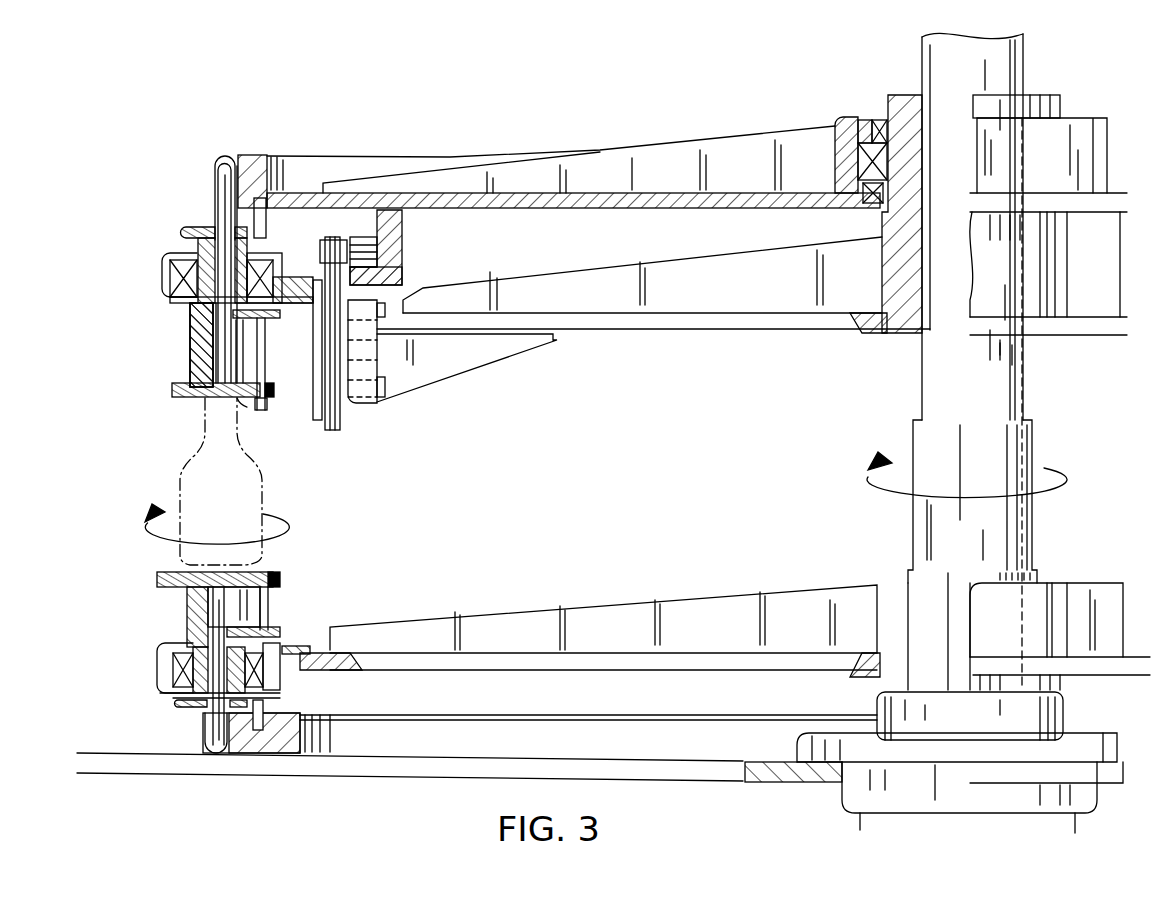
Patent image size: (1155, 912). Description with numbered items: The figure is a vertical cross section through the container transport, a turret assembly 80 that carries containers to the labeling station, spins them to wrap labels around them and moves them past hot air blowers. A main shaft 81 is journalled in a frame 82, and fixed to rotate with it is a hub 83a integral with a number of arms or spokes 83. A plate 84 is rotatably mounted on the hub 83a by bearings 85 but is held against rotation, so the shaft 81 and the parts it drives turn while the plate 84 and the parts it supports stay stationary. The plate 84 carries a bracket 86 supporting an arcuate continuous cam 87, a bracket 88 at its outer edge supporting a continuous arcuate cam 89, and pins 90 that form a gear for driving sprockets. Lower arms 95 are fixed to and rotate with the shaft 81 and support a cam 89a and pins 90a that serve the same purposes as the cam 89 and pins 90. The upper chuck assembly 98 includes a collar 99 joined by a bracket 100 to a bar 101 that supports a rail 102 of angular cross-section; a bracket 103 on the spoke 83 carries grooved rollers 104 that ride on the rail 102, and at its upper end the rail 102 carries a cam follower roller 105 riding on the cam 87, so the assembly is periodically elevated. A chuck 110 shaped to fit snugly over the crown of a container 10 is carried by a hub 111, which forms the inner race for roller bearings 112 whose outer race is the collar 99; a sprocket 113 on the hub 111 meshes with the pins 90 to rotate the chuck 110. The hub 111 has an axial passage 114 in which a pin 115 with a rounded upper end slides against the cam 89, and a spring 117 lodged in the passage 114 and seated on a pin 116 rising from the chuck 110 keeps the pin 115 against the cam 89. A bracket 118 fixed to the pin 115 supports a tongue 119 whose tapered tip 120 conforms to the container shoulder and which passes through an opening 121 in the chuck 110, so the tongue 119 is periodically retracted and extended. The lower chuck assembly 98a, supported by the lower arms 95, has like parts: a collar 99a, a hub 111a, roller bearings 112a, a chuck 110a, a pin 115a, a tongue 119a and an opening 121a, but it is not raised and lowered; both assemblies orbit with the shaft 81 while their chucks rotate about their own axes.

The container 10 is at (168, 493).
The turret assembly 80 is at (1050, 86).
The main shaft 81 is at (968, 401).
The frame 82 is at (1073, 733).
The arm or spoke 83 is at (797, 337).
The hub 83a is at (880, 222).
The plate 84 is at (670, 195).
The bearings 85 is at (835, 120).
The bracket 86 is at (402, 226).
The arcuate continuous cam 87 is at (378, 255).
The bracket 88 is at (260, 157).
The continuous arcuate cam 89 is at (257, 155).
The cam 89a is at (205, 746).
The pins 90 is at (266, 227).
The pins 90a is at (264, 712).
The lower arms 95 is at (567, 670).
The chuck assembly 98 is at (200, 282).
The chuck assembly 98a is at (205, 652).
The collar 99 is at (162, 270).
The collar 99a is at (160, 675).
The bracket 100 is at (300, 277).
The bar 101 is at (318, 420).
The rail 102 is at (340, 430).
The bracket 103 is at (420, 385).
The rollers 104 is at (367, 365).
The cam follower roller 105 is at (400, 277).
The chuck 110 is at (183, 398).
The chuck 110a is at (160, 572).
The hub 111 is at (190, 348).
The hub 111a is at (187, 615).
The roller bearings 112 is at (198, 246).
The roller bearings 112a is at (173, 666).
The sprocket 113 is at (192, 227).
The axial passage 114 is at (190, 308).
The pin 115 is at (218, 186).
The pin 115a is at (213, 722).
The pin 116 is at (190, 364).
The spring 117 is at (185, 299).
The bracket 118 is at (272, 319).
The tongue 119 is at (266, 360).
The tongue 119a is at (270, 606).
The tapered tip 120 is at (247, 407).
The opening 121 is at (275, 388).
The opening 121a is at (280, 575).